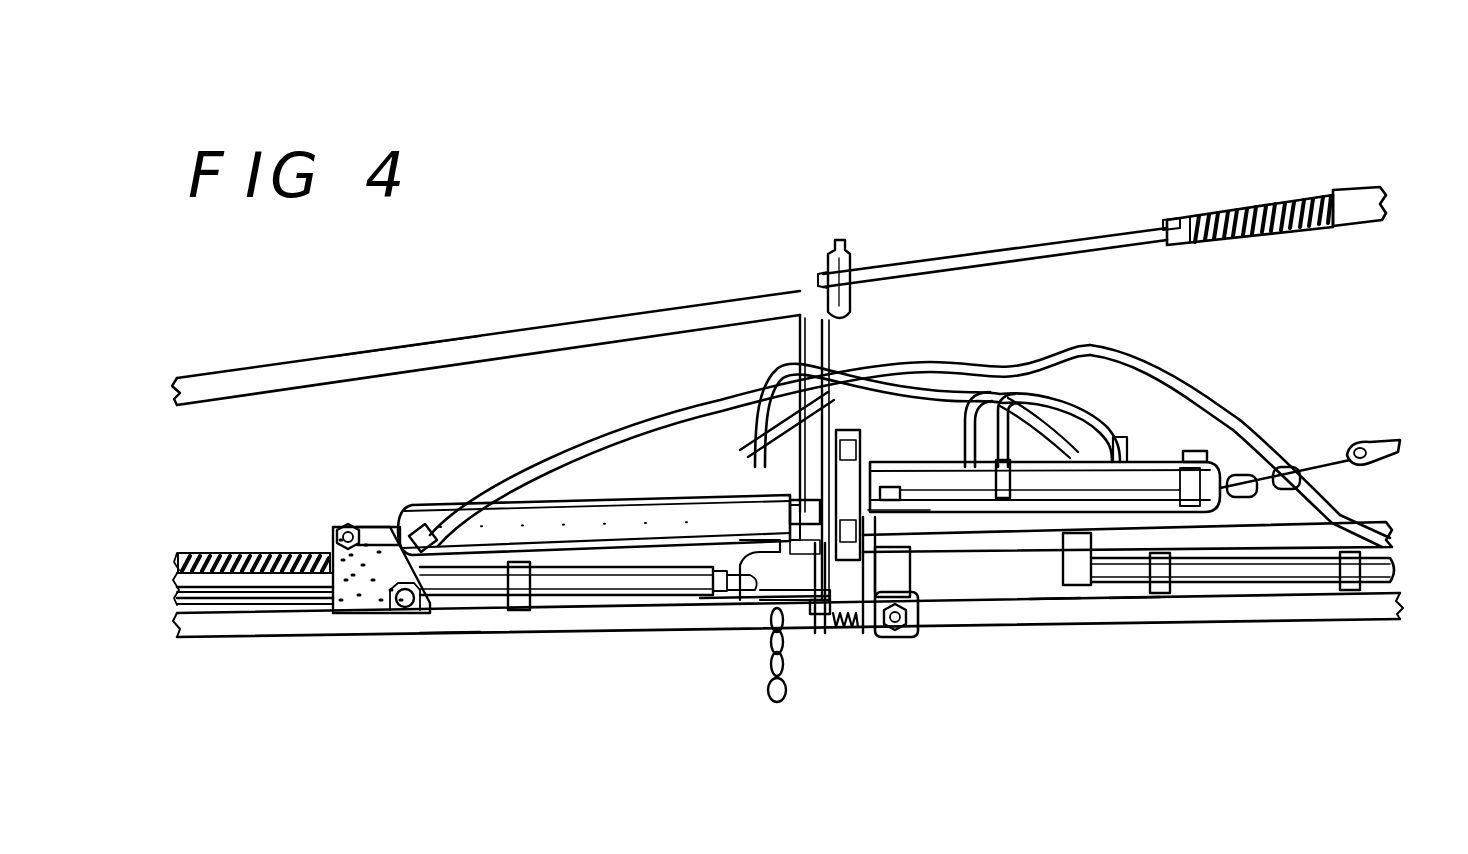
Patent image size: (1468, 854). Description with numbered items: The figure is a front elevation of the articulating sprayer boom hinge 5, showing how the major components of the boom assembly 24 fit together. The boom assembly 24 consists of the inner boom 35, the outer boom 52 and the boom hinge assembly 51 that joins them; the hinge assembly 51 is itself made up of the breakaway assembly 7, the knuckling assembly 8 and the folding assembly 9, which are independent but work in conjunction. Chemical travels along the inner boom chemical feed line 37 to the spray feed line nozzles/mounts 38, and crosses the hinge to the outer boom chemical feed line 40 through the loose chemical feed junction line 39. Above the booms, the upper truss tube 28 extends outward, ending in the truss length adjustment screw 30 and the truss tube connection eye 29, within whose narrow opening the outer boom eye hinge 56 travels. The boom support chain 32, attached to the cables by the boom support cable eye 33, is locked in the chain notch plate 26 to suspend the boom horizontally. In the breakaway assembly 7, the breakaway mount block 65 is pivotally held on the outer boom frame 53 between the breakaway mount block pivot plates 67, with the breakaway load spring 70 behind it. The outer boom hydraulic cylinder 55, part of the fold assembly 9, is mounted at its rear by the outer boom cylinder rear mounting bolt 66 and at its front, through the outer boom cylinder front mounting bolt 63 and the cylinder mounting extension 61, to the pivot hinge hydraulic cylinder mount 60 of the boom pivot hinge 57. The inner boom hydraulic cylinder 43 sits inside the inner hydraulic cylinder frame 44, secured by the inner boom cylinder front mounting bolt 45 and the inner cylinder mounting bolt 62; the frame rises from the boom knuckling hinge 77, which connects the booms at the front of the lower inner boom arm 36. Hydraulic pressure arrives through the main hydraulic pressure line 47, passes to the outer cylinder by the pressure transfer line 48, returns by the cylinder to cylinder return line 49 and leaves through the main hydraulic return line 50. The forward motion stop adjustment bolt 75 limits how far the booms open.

The articulating sprayer boom hinge 5 is at (380, 322).
The breakaway assembly 7 is at (304, 650).
The knuckling assembly 8 is at (877, 680).
The folding assembly 9 is at (822, 700).
The boom assembly 24 is at (322, 335).
The chain notch plate 26 is at (760, 612).
The upper truss tube 28 is at (1328, 187).
The truss tube connection eye 29 is at (915, 252).
The truss length adjustment screw 30 is at (1212, 196).
The boom support chain 32 is at (1247, 500).
The boom support cable eye 33 is at (1352, 432).
The inner boom 35 is at (1053, 648).
The lower inner boom arm 36 is at (1133, 616).
The inner boom chemical feed line 37 is at (1384, 588).
The spray feed line nozzles/mounts 38 is at (1350, 575).
The chemical feed junction line 39 is at (975, 364).
The outer boom chemical feed line 40 is at (584, 566).
The inner boom hydraulic cylinder 43 is at (1018, 496).
The inner hydraulic cylinder frame 44 is at (1085, 450).
The inner boom cylinder front mounting bolt 45 is at (1198, 448).
The main hydraulic pressure line 47 is at (1232, 394).
The pressure transfer line 48 is at (478, 488).
The cylinder to cylinder return line 49 is at (776, 367).
The main hydraulic return line 50 is at (1102, 340).
The boom hinge assembly 51 is at (795, 695).
The outer boom 52 is at (452, 654).
The outer boom frame 53 is at (224, 372).
The outer boom hydraulic cylinder 55 is at (565, 538).
The outer boom eye hinge 56 is at (818, 247).
The boom pivot hinge 57 is at (820, 461).
The pivot hinge hydraulic cylinder mount 60 is at (848, 514).
The cylinder mounting extension 61 is at (752, 496).
The inner cylinder mounting bolt 62 is at (897, 440).
The outer boom cylinder front mounting bolt 63 is at (803, 545).
The breakaway mount block 65 is at (384, 570).
The outer boom cylinder rear mounting bolt 66 is at (340, 524).
The breakaway mount block pivot plates 67 is at (402, 612).
The breakaway load spring 70 is at (240, 545).
The forward motion stop adjustment bolt 75 is at (848, 642).
The boom knuckling hinge 77 is at (909, 643).